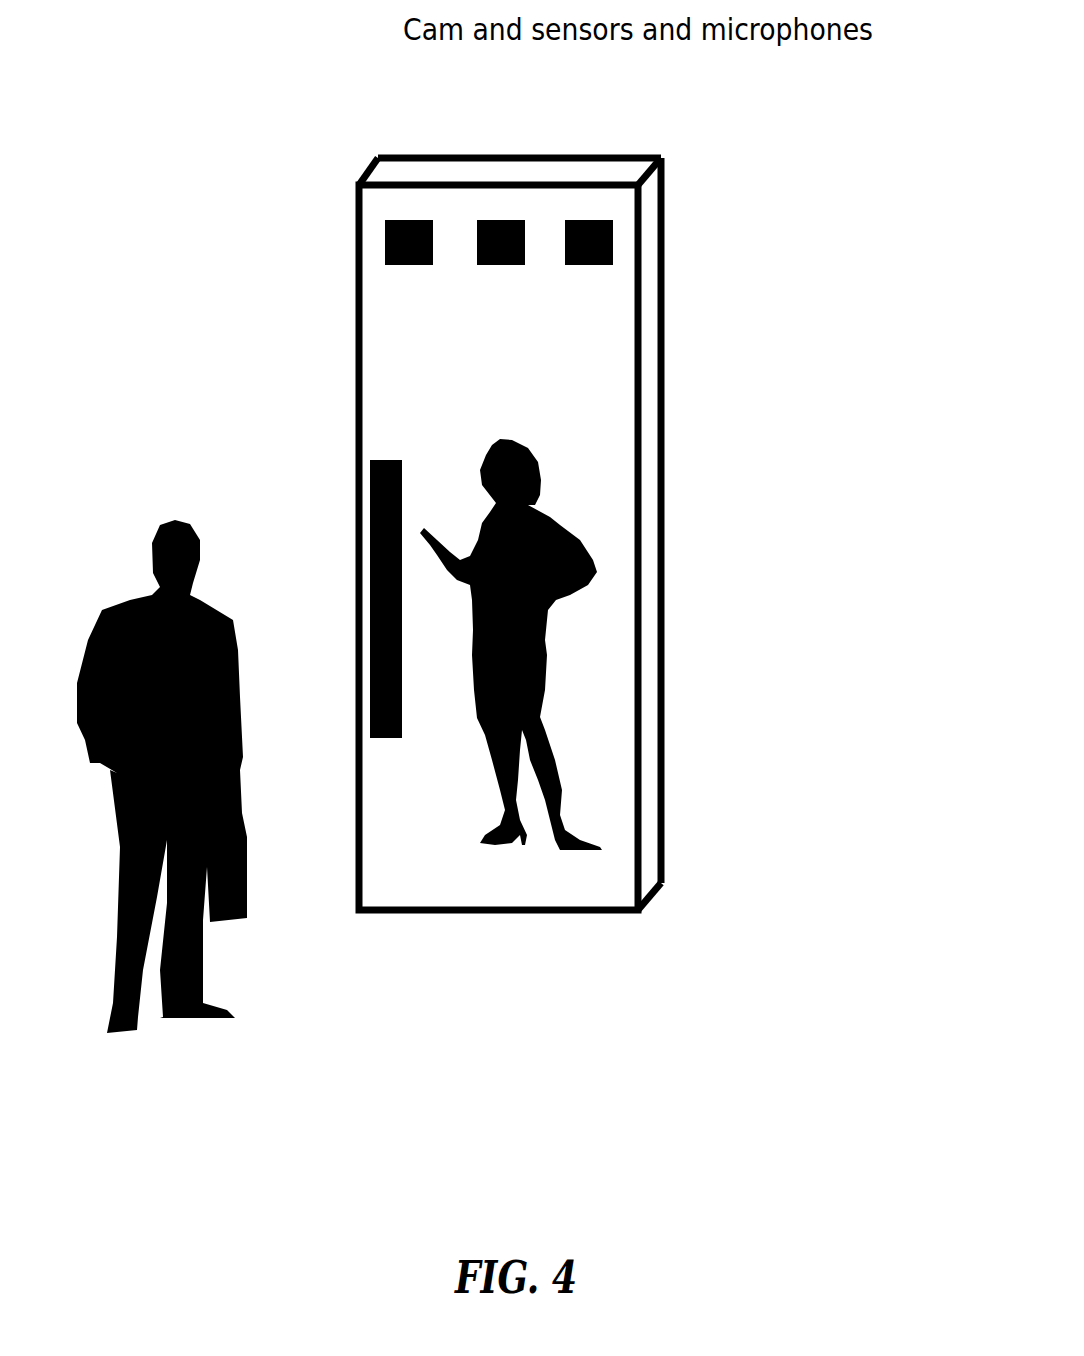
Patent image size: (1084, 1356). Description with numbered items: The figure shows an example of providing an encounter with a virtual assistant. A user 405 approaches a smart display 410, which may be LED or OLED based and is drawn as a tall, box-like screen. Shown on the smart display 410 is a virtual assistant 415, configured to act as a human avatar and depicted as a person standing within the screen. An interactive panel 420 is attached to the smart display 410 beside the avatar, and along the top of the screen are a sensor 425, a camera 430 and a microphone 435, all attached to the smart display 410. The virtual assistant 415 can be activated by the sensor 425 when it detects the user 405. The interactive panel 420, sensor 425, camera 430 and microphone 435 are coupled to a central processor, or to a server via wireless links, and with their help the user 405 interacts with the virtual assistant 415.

The user 405 is at (173, 1060).
The smart display 410 is at (668, 397).
The virtual assistant 415 is at (492, 752).
The interactive panel 420 is at (377, 448).
The sensor 425 is at (398, 218).
The camera 430 is at (497, 217).
The microphone 435 is at (590, 217).